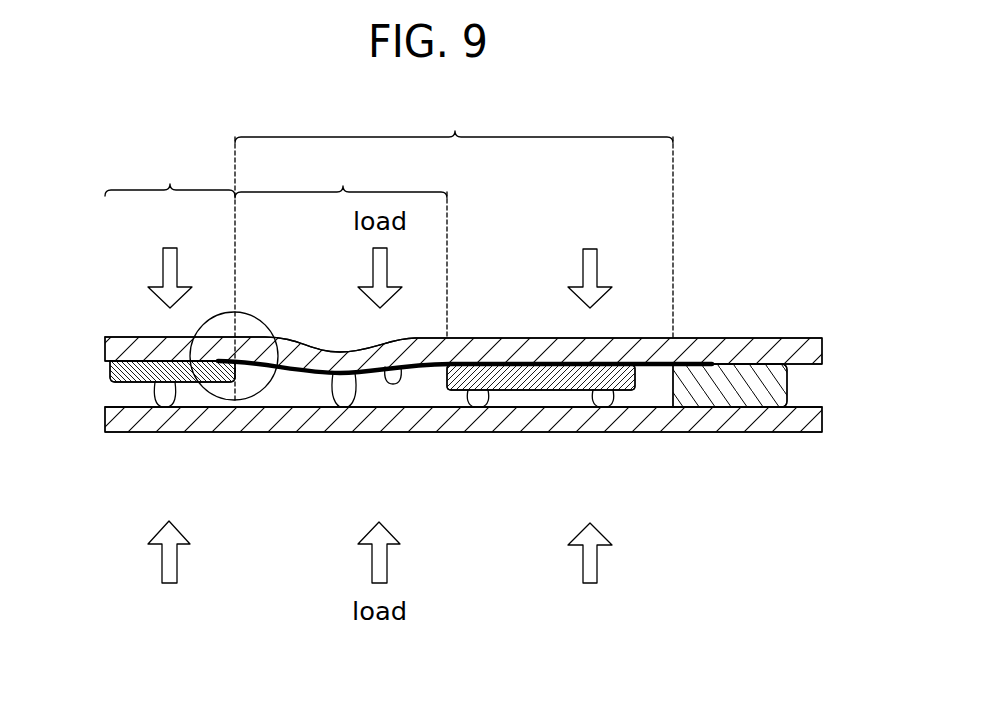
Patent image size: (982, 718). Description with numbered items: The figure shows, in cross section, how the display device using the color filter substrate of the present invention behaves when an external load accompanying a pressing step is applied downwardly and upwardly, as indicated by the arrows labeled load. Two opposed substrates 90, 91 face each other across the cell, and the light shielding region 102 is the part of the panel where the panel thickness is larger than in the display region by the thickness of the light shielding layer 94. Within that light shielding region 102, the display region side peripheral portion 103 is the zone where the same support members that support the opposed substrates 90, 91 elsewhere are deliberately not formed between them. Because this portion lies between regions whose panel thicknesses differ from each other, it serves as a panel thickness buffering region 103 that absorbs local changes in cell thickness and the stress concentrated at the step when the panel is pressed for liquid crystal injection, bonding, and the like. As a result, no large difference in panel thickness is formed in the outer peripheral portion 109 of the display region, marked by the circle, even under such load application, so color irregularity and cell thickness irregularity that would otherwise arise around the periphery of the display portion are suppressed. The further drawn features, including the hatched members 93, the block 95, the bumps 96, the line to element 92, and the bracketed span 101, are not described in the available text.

The opposed substrate 90 is at (703, 425).
The opposed substrate 91 is at (725, 350).
The mounting surface of lower plate 92 is at (115, 397).
The electronic component 93 is at (112, 372).
The light shielding layer 94 is at (398, 372).
The spacer block 95 is at (765, 398).
The solder bump 96 is at (166, 405).
The outer peripheral portion of the display region 109 is at (239, 411).
The first region 101 is at (170, 268).
The light shielding region 102 is at (454, 216).
The display region side peripheral portion 103 is at (341, 243).